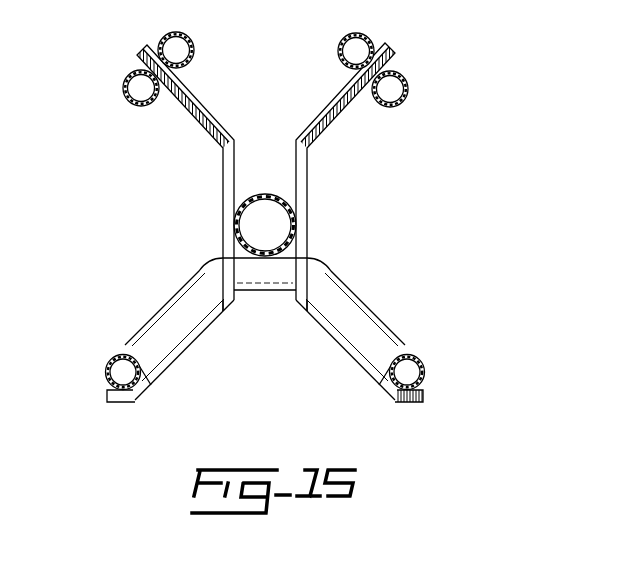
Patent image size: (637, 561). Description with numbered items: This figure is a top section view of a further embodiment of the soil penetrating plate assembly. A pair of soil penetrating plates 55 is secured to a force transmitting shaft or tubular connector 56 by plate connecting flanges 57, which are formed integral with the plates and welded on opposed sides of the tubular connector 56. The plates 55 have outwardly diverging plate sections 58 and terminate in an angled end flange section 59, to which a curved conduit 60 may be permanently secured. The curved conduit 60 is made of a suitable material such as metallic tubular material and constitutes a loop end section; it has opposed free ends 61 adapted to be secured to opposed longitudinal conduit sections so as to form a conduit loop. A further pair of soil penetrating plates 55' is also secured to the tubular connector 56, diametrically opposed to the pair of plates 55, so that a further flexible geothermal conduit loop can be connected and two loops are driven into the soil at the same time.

The soil penetrating plates 55 is at (260, 338).
The further pair of soil penetrating plates 55' is at (265, 171).
The force transmitting shaft or tubular connector 56 is at (288, 203).
The plate connecting flanges 57 is at (308, 245).
The outwardly diverging plate sections 58 is at (150, 388).
The angled end flange section 59 is at (120, 402).
The curved conduit 60 is at (191, 282).
The opposed free ends 61 is at (110, 357).